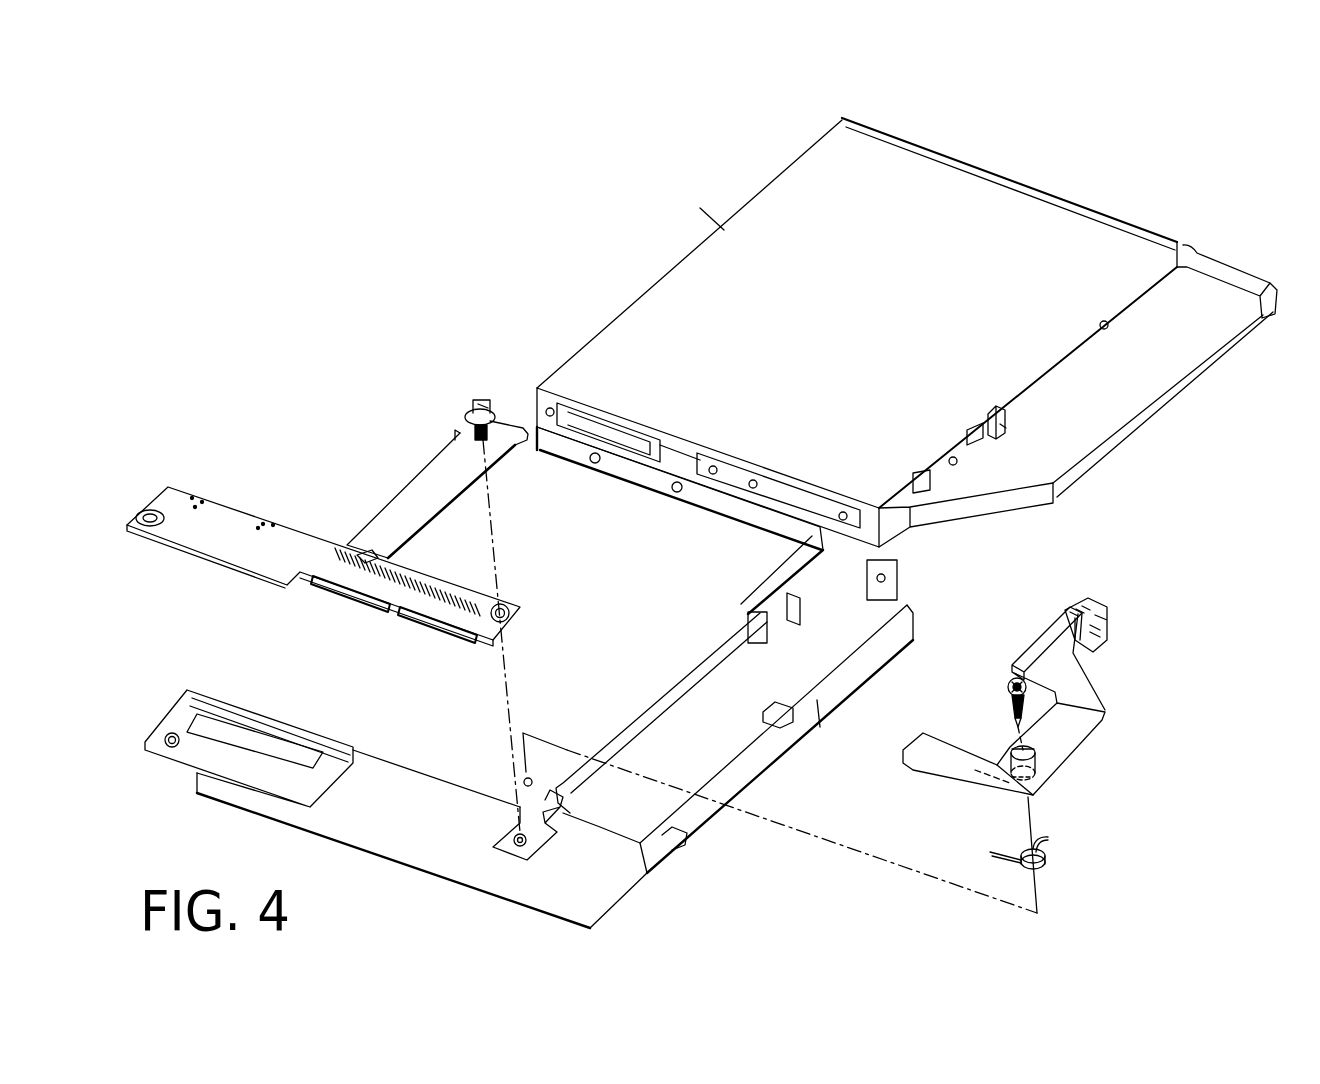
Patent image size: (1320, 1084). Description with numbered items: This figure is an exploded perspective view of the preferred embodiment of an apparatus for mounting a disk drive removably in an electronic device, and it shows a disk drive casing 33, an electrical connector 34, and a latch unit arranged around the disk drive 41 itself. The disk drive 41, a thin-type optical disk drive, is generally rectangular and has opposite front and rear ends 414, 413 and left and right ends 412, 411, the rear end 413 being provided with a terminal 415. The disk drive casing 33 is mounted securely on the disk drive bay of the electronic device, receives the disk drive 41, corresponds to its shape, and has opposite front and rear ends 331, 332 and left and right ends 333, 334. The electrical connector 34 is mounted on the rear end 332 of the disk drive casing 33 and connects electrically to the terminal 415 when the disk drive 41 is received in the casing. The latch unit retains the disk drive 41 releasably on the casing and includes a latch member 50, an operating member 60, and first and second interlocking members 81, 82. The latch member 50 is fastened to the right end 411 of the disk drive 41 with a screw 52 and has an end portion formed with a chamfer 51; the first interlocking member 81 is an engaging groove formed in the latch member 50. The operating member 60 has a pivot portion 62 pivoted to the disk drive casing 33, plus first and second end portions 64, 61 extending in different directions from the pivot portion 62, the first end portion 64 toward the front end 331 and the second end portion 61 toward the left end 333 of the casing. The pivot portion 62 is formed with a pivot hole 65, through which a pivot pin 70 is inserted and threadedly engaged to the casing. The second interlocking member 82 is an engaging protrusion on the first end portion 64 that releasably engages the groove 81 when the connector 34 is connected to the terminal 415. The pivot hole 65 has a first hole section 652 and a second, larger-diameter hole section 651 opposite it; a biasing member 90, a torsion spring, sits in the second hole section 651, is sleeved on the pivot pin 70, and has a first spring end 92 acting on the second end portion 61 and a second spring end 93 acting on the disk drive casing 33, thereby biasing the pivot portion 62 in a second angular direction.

The disk drive 41 is at (909, 294).
The right end 411 is at (1078, 337).
The left end 412 is at (710, 232).
The rear end 413 is at (686, 452).
The front end 414 is at (1195, 245).
The terminal 415 is at (742, 447).
The latch member 50 is at (1042, 417).
The chamfer 51 is at (920, 475).
The screw 52 is at (953, 457).
The first interlocking member 81 is at (1003, 426).
The disk drive casing 33 is at (529, 752).
The front end 331 is at (795, 552).
The rear end 332 is at (472, 793).
The left end 333 is at (402, 498).
The right end 334 is at (775, 735).
The electrical connector 34 is at (177, 533).
The operating member 60 is at (997, 693).
The second end portion 61 is at (910, 770).
The pivot portion 62 is at (1050, 772).
The first end portion 64 is at (1050, 636).
The pivot hole 65 is at (1008, 733).
The second hole section 651 is at (1012, 800).
The first hole section 652 is at (1012, 750).
The pivot pin 70 is at (992, 696).
The second interlocking member 82 is at (1082, 662).
The biasing member 90 is at (1050, 880).
The first spring end 92 is at (1000, 865).
The second spring end 93 is at (1045, 834).